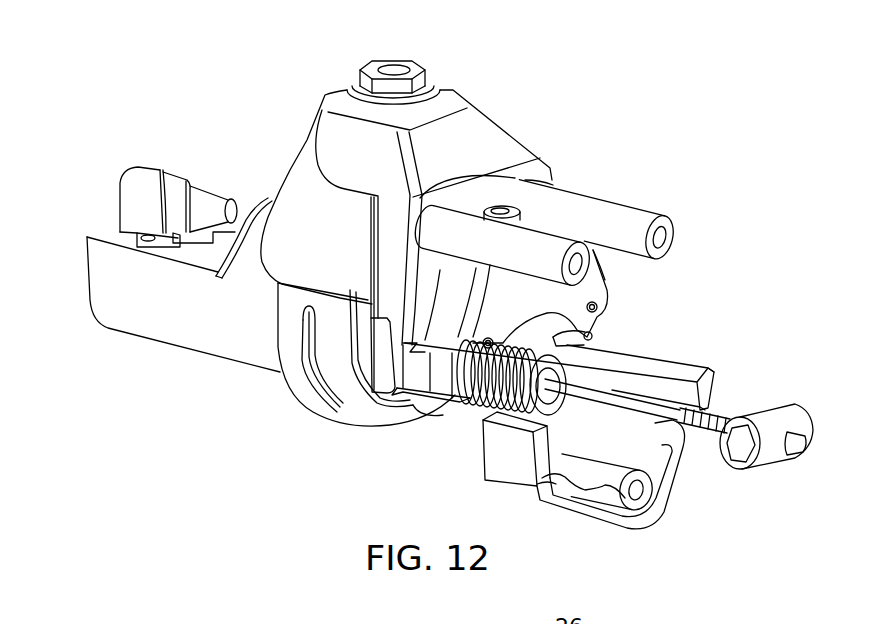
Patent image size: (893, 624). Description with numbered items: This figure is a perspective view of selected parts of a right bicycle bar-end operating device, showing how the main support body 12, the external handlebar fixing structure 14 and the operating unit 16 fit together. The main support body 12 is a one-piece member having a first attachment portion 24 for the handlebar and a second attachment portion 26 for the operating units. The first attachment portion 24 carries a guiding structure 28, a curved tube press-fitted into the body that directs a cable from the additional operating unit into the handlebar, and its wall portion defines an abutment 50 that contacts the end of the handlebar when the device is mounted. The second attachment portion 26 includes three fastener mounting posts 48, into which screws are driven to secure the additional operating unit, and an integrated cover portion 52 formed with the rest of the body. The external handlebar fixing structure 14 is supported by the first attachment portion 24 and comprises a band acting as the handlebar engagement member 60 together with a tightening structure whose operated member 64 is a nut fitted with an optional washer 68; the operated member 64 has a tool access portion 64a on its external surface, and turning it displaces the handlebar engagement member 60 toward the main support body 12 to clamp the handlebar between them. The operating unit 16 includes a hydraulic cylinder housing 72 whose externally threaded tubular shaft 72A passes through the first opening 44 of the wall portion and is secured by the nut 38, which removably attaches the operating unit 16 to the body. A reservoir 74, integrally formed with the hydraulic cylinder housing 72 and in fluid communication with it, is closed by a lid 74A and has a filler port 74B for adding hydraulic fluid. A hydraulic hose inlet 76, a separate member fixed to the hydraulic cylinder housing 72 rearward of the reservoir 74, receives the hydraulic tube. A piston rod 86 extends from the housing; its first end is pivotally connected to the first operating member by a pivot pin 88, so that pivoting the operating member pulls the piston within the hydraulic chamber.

The main support body 12 is at (503, 116).
The external handlebar fixing structure 14 is at (286, 385).
The operating unit 16 is at (196, 352).
The first attachment portion 24 is at (295, 185).
The second attachment portion 26 is at (662, 192).
The guiding structure 28 is at (595, 334).
The nut 38 is at (440, 410).
The first opening 44 is at (405, 415).
The fastener mounting posts 48 is at (533, 242).
The abutment 50 is at (384, 371).
The integrated cover portion 52 is at (587, 522).
The handlebar engagement member 60 is at (316, 417).
The operated member 64 is at (412, 60).
The tool access portion 64a is at (424, 78).
The washer 68 is at (356, 88).
The hydraulic cylinder housing 72 is at (137, 317).
The tubular shaft 72A is at (487, 432).
The reservoir 74 is at (442, 292).
The lid 74A is at (606, 281).
The filler port 74B is at (481, 204).
The hydraulic hose inlet 76 is at (163, 170).
The piston rod 86 is at (620, 400).
The pivot pin 88 is at (770, 405).